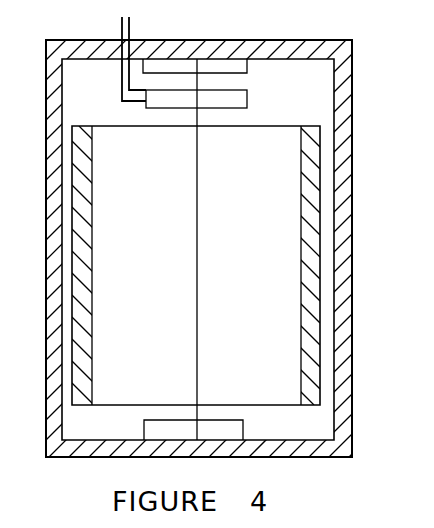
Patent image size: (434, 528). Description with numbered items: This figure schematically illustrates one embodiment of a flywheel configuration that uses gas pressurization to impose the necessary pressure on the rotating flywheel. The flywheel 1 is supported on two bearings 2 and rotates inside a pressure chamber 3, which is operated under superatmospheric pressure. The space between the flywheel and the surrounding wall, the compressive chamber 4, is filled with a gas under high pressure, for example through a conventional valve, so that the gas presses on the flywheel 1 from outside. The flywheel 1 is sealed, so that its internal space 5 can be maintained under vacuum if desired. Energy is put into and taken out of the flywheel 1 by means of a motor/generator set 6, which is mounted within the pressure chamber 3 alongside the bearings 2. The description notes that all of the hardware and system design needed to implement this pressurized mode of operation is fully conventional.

The flywheel 1 is at (305, 152).
The bearings 2 is at (235, 68).
The pressure chamber 3 is at (277, 50).
The compressive chamber 4 is at (121, 64).
The internal space 5 is at (196, 249).
The motor/generator set 6 is at (235, 98).